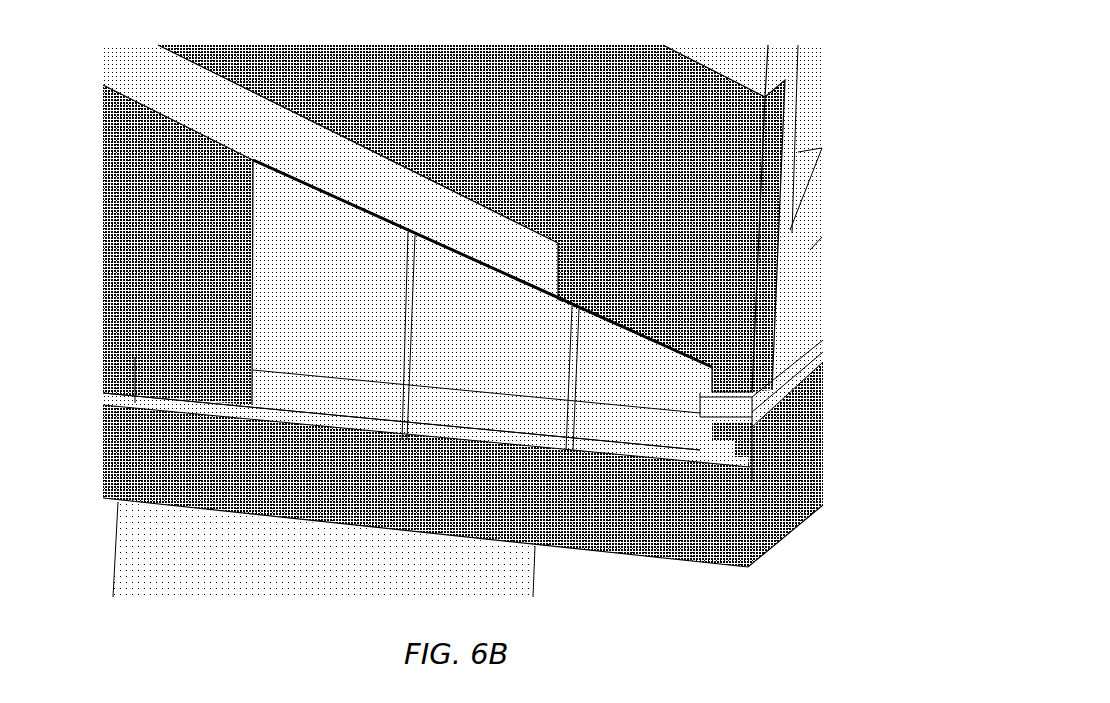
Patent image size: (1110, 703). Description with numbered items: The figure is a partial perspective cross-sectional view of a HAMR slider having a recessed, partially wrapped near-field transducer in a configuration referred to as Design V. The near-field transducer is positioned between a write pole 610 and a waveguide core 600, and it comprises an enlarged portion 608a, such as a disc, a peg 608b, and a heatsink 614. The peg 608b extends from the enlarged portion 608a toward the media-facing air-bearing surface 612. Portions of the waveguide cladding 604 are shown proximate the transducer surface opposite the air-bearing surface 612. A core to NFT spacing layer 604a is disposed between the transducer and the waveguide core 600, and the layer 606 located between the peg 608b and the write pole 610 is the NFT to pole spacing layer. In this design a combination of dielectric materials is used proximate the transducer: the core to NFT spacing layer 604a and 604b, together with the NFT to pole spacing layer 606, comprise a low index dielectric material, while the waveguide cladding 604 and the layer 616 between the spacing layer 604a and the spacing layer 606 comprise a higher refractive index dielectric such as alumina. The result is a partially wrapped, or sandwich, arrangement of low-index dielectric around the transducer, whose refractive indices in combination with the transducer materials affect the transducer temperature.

The waveguide core 600 is at (753, 553).
The waveguide cladding 604 is at (178, 245).
The core to NFT spacing (CNS) layer 604a is at (391, 412).
The CNS layer portion 604b is at (818, 402).
The NFT to pole spacing (NPS) layer 606 is at (813, 368).
The enlarged portion 608a is at (401, 410).
The peg 608b is at (687, 425).
The write pole 610 is at (471, 218).
The air-bearing surface (ABS) 612 is at (815, 125).
The heatsink 614 is at (490, 341).
The layer between CNS layer and NPS layer 616 is at (816, 394).